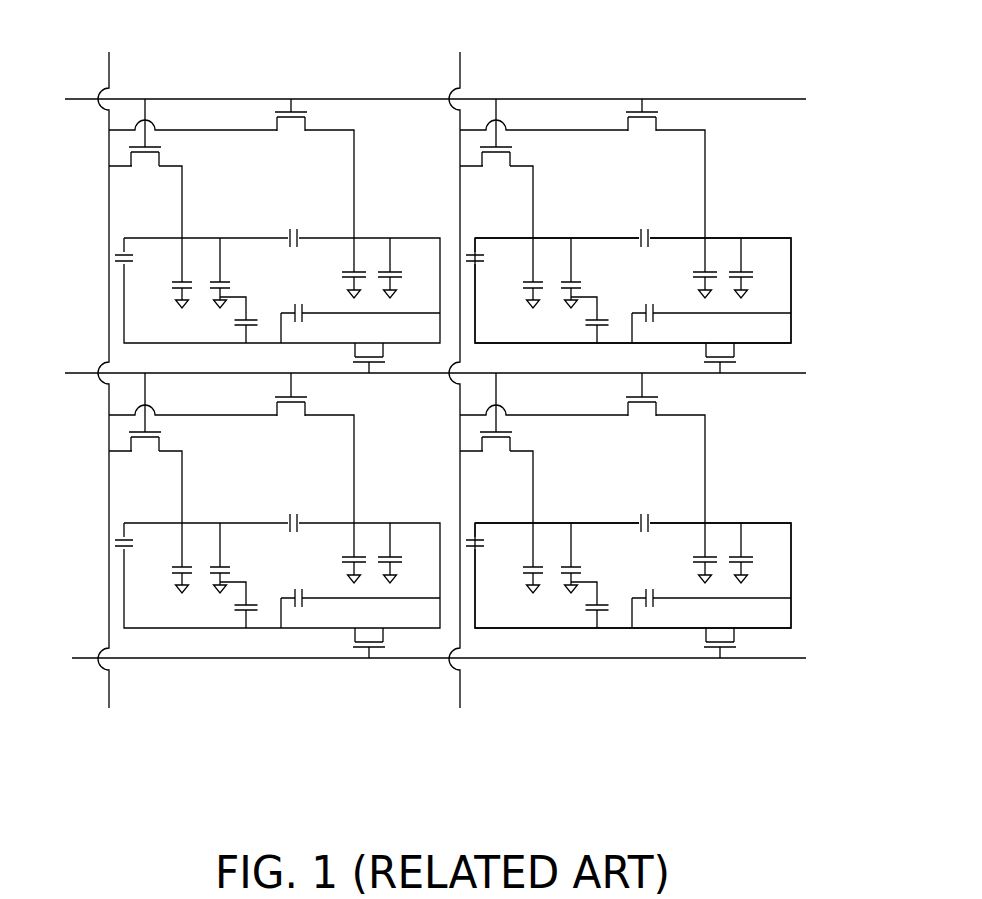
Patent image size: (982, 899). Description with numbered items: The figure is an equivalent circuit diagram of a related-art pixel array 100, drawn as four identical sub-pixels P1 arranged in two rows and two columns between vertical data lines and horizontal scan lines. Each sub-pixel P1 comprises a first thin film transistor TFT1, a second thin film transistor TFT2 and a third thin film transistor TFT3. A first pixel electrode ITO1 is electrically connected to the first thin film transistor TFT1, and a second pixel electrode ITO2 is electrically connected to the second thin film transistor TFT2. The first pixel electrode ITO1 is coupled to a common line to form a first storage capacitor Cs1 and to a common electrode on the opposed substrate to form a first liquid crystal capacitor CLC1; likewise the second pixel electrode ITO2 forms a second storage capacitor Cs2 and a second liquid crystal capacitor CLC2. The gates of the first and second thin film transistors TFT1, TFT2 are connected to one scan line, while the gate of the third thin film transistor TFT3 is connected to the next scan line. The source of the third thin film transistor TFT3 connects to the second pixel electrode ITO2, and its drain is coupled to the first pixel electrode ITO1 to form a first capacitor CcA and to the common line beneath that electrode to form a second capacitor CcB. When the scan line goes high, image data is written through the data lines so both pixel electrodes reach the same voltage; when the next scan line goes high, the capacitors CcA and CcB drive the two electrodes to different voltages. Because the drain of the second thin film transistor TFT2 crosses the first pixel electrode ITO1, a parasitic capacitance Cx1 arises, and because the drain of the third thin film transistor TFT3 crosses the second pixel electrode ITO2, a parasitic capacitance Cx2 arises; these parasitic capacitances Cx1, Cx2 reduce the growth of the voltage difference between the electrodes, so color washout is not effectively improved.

The pixel array 100 is at (800, 763).
The sub-pixel P1 is at (801, 543).
The first thin film transistor TFT1 is at (320, 287).
The second thin film transistor TFT2 is at (466, 272).
The third thin film transistor TFT3 is at (544, 489).
The first pixel electrode ITO1 is at (381, 367).
The second pixel electrode ITO2 is at (545, 404).
The parasitic capacitance Cx1 is at (469, 369).
The parasitic capacitance Cx2 is at (475, 444).
The first capacitor CcA is at (311, 399).
The second capacitor CcB is at (432, 466).
The first liquid crystal capacitor CLC1 is at (343, 433).
The second liquid crystal capacitor CLC2 is at (516, 423).
The first storage capacitor Cs1 is at (406, 433).
The second storage capacitor Cs2 is at (576, 423).